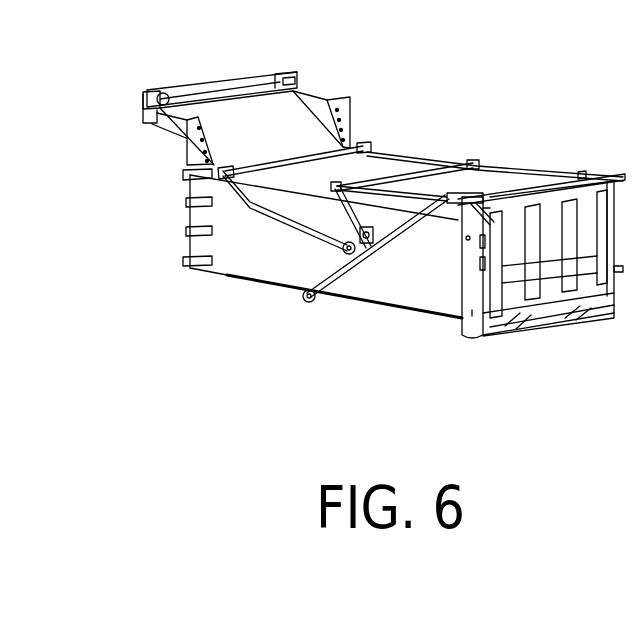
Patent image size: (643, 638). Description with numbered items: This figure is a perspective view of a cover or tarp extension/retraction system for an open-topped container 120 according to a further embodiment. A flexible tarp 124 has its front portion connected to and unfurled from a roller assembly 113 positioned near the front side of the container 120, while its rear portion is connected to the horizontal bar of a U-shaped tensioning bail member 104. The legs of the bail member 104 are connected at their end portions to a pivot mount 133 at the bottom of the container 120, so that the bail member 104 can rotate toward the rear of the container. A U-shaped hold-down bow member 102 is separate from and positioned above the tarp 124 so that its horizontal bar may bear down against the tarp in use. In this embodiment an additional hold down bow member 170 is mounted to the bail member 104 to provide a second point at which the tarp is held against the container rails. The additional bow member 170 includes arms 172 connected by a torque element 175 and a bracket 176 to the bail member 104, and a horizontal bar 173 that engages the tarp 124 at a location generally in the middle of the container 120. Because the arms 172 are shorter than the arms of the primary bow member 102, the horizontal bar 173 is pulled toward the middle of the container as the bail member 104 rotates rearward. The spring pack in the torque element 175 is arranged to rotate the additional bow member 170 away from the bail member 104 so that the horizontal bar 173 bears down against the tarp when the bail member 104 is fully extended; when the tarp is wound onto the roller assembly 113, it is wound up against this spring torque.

The roller assembly 113 is at (273, 68).
The tarp 124 is at (287, 112).
The hold-down bow member 102 is at (243, 283).
The tensioning bail member 104 is at (337, 294).
The open-topped container 120 is at (436, 298).
The additional hold down bow member 170 is at (370, 176).
The horizontal bar 173 is at (413, 170).
The arms 172 is at (312, 228).
The torque element 175 is at (395, 258).
The bracket 176 is at (366, 258).
The pivot mount 133 is at (302, 305).